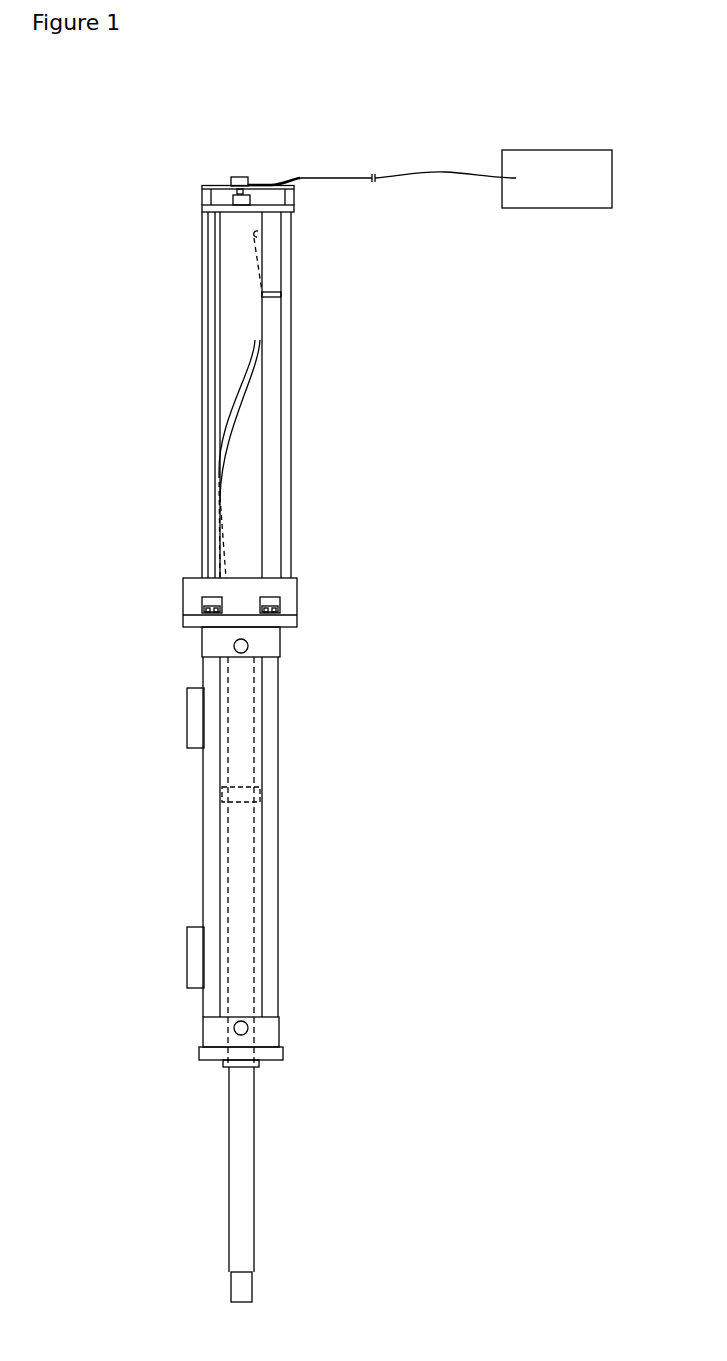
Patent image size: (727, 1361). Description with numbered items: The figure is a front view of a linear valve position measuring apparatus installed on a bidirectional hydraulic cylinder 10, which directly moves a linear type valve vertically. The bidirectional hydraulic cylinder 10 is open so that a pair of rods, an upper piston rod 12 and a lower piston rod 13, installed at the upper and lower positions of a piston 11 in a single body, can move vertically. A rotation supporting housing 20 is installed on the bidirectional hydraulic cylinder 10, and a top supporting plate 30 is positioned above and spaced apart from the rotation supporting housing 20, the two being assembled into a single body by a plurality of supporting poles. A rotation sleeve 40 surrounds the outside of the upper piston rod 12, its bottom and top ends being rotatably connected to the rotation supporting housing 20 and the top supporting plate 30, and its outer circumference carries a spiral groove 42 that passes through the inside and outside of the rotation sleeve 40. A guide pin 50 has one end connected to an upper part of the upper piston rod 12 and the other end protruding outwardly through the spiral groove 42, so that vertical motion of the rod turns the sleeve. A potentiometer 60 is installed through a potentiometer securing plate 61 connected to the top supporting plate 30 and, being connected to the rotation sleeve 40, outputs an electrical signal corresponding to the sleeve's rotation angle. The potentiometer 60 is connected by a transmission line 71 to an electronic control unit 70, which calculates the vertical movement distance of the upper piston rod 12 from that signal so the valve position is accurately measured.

The bidirectional hydraulic cylinder 10 is at (212, 797).
The piston 11 is at (238, 795).
The upper piston rod 12 is at (245, 720).
The lower piston rod 13 is at (242, 1207).
The rotation supporting housing 20 is at (193, 592).
The top supporting plate 30 is at (210, 208).
The rotation sleeve 40 is at (235, 316).
The spiral groove 42 is at (242, 408).
The guide pin 50 is at (266, 296).
The potentiometer 60 is at (238, 177).
The potentiometer securing plate 61 is at (213, 188).
The electronic control unit 70 is at (557, 208).
The transmission line 71 is at (400, 172).